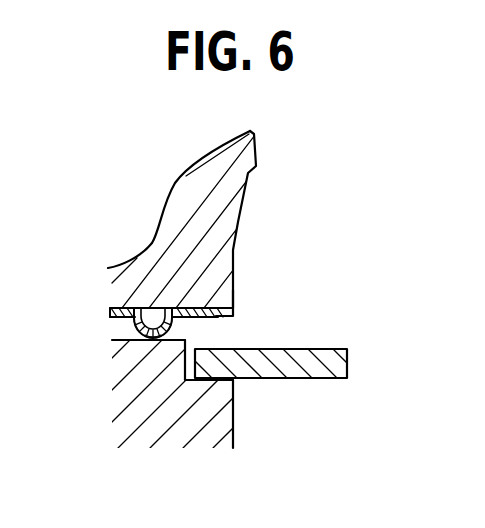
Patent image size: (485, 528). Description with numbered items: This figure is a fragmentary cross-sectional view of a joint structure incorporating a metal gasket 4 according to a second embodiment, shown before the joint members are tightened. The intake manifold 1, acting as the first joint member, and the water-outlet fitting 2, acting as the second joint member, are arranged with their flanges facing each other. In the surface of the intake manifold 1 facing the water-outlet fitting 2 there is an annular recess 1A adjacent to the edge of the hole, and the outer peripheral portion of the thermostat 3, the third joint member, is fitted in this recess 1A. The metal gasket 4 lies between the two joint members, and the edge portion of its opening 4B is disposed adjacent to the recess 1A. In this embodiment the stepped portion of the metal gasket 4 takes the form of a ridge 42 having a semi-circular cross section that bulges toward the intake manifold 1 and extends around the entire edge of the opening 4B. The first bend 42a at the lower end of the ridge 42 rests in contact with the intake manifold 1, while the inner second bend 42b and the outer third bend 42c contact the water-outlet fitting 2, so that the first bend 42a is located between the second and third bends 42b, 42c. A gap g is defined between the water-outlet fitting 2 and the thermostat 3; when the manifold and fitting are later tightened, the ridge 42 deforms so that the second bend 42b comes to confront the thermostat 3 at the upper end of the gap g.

The intake manifold 1 is at (133, 402).
The annular recess 1A is at (213, 380).
The water-outlet fitting 2 is at (182, 218).
The thermostat 3 is at (328, 348).
The metal gasket 4 is at (123, 310).
The opening 4B is at (236, 311).
The ridge 42 is at (178, 337).
The first bend 42a is at (143, 355).
The second bend 42b is at (178, 322).
The third bend 42c is at (130, 331).
The gap g is at (220, 340).